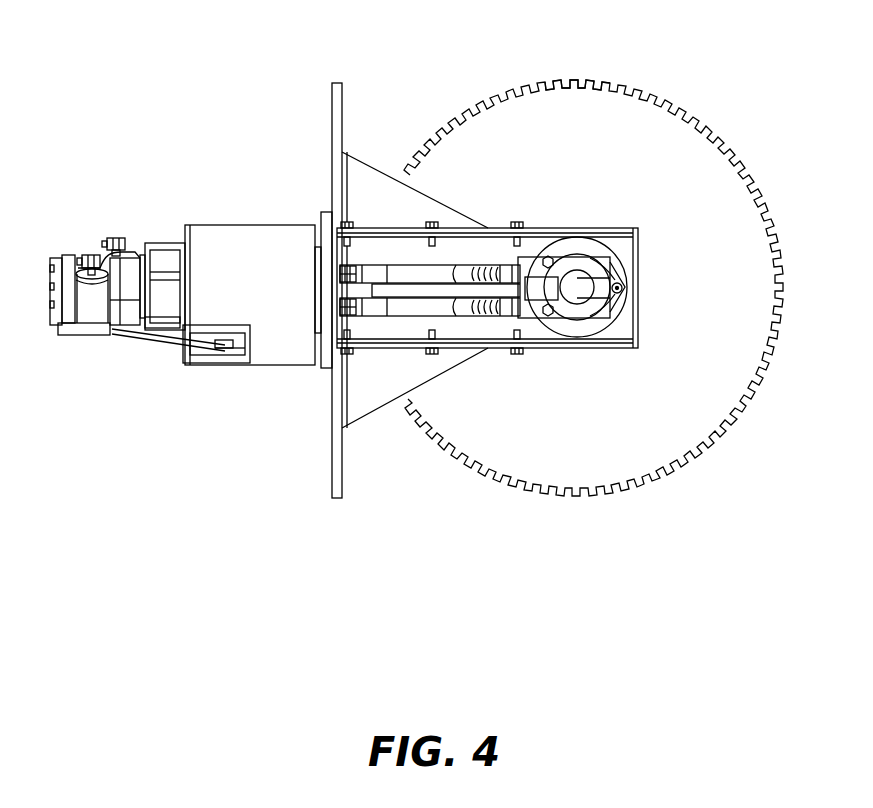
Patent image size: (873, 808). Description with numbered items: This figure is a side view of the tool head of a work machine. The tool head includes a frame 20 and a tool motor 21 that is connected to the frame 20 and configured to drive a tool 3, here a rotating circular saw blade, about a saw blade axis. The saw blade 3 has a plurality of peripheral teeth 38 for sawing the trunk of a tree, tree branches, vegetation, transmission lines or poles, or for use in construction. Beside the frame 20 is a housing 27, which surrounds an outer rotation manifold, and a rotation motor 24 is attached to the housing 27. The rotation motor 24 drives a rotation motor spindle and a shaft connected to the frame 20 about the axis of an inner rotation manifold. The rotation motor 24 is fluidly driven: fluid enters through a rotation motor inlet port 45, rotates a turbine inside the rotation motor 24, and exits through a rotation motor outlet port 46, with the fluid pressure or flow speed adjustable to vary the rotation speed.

The tool 3 is at (658, 150).
The frame 20 is at (337, 83).
The tool motor 21 is at (577, 313).
The rotation motor 24 is at (83, 303).
The housing 27 is at (250, 235).
The peripheral teeth 38 is at (578, 86).
The rotation motor inlet port 45 is at (92, 254).
The rotation motor outlet port 46 is at (117, 237).